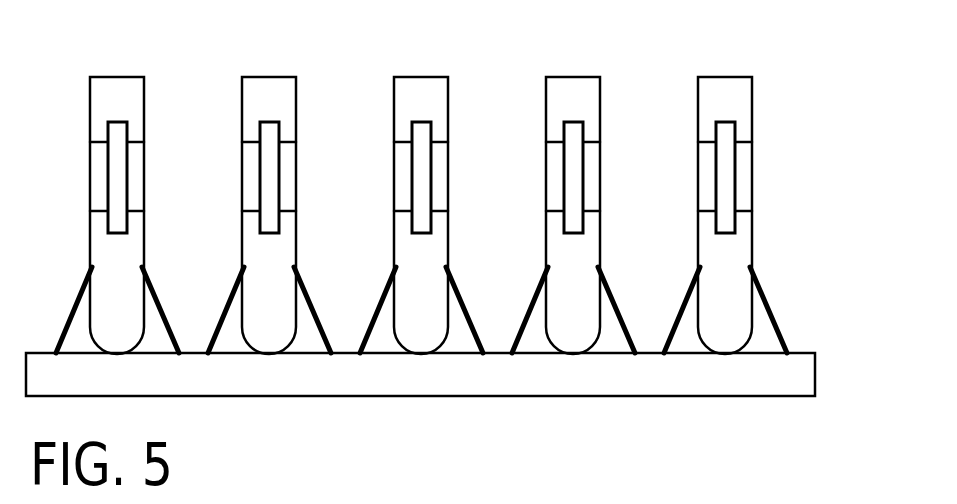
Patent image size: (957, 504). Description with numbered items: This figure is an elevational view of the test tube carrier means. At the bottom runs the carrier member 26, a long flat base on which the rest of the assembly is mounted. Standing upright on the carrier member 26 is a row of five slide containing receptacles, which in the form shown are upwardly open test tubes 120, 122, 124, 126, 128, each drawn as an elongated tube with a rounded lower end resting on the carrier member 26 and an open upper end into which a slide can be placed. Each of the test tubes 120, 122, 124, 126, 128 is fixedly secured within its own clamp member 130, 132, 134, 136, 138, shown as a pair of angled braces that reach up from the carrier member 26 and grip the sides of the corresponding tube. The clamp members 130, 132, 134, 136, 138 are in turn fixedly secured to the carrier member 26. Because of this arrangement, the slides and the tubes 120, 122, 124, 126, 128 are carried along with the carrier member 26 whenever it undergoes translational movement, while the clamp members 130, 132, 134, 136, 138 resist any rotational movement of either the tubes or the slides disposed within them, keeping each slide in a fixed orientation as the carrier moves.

The carrier member 26 is at (676, 387).
The test tube 120 is at (730, 76).
The test tube 122 is at (578, 76).
The test tube 124 is at (422, 76).
The test tube 126 is at (272, 76).
The test tube 128 is at (130, 76).
The clamp member 130 is at (775, 307).
The clamp member 132 is at (616, 298).
The clamp member 134 is at (463, 300).
The clamp member 136 is at (312, 300).
The clamp member 138 is at (155, 290).